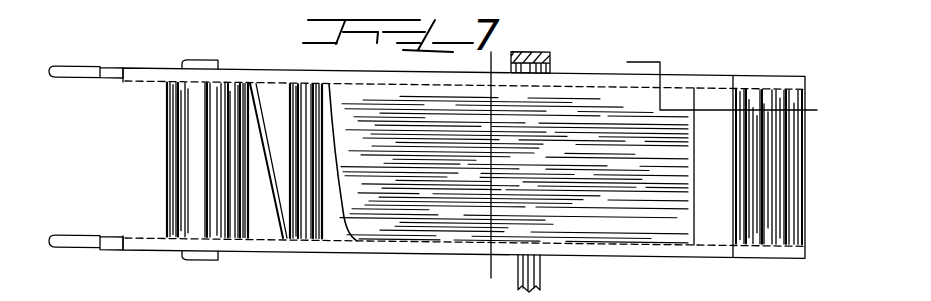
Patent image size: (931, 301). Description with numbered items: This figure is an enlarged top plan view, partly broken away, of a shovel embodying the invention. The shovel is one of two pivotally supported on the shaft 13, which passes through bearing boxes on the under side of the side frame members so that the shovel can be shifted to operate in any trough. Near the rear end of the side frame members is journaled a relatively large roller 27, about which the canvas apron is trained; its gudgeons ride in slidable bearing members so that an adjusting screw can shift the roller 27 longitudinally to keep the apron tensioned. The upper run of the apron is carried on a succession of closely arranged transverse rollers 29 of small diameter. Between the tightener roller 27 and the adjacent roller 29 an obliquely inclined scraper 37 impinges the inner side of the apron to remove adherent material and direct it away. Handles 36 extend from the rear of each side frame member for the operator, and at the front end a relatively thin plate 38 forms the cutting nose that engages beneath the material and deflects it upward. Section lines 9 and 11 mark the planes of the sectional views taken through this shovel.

The section line 9— 9 is at (503, 61).
The section line 11— 11 is at (627, 48).
The shaft 13 is at (541, 272).
The roller 27 is at (234, 228).
The rollers 29 is at (313, 238).
The handles 36 is at (78, 240).
The scraper 37 is at (266, 149).
The plate 38 is at (766, 90).